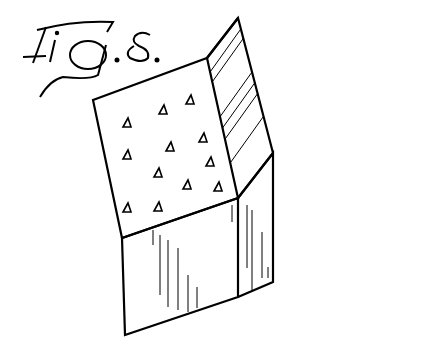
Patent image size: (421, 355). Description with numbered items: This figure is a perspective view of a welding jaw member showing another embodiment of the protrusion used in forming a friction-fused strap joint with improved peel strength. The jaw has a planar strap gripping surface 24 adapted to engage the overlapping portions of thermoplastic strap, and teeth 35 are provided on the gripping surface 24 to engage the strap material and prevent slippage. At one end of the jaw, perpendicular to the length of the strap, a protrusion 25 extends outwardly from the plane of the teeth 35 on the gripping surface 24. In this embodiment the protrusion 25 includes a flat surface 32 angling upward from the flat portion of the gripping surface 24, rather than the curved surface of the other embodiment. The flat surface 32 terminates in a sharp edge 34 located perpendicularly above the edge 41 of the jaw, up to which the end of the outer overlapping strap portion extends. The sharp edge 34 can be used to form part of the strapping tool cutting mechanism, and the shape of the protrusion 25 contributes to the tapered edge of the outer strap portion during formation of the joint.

The strap gripping surface 24 is at (110, 120).
The protrusion 25 is at (267, 195).
The flat surface 32 is at (226, 47).
The sharp edge 34 is at (250, 52).
The teeth 35 is at (154, 173).
The edge of jaw 41 is at (273, 232).